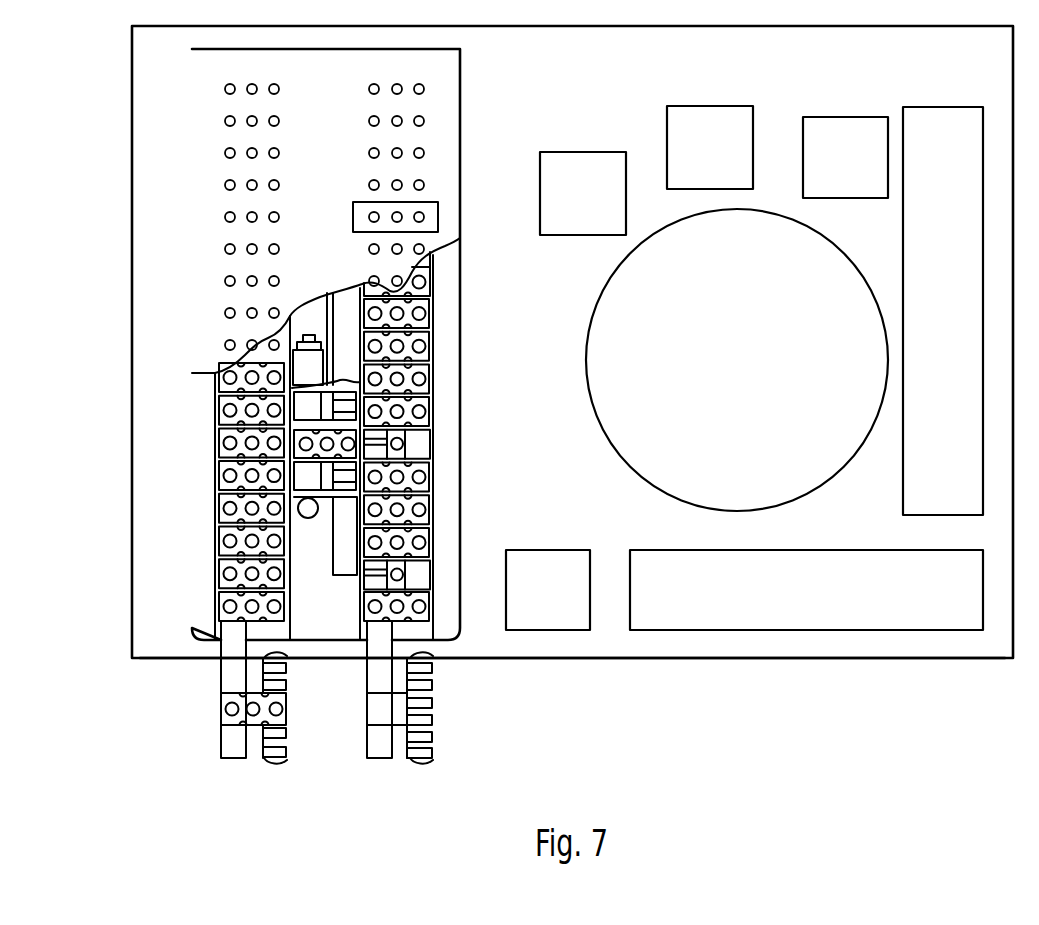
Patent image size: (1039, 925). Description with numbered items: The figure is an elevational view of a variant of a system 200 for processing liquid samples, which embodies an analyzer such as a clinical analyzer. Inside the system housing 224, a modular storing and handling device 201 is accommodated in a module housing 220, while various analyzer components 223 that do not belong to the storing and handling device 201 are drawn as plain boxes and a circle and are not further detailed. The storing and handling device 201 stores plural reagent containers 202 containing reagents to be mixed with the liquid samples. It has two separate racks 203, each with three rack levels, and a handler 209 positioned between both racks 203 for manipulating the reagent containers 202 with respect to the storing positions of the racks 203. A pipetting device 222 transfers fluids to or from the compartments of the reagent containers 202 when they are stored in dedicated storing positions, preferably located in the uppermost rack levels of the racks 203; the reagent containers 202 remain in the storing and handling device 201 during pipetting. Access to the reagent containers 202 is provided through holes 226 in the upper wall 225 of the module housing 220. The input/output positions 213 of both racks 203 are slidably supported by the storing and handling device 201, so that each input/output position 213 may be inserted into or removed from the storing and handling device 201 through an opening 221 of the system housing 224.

The system 200 is at (662, 659).
The storing and handling device 201 is at (188, 574).
The reagent containers 202 is at (230, 552).
The racks 203 is at (363, 607).
The handler 209 is at (325, 498).
The input/output positions 213 is at (383, 760).
The module housing 220 is at (472, 101).
The opening 221 is at (367, 662).
The pipetting device 222 is at (440, 212).
The analyzer components 223 is at (600, 209).
The system housing 224 is at (899, 667).
The upper wall 225 is at (204, 117).
The holes 226 is at (224, 248).